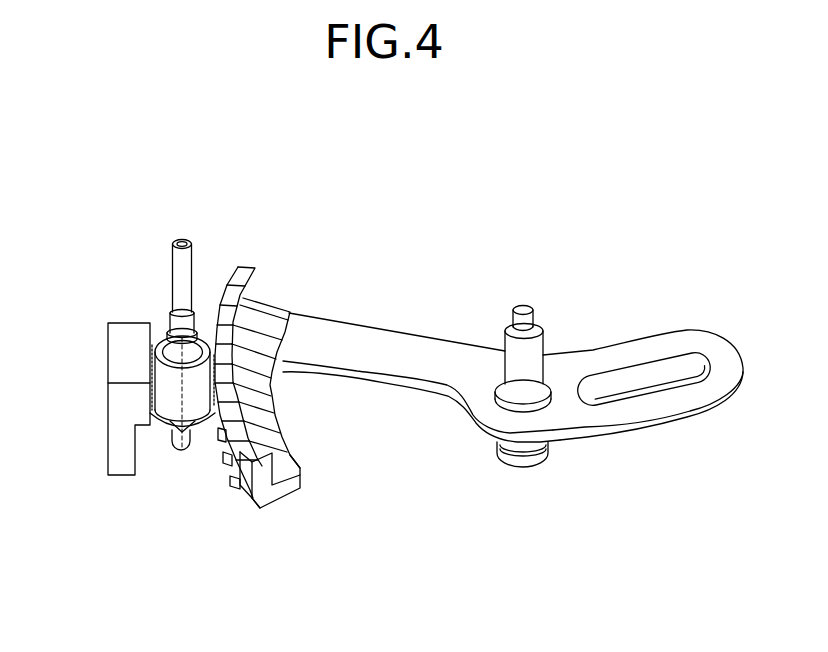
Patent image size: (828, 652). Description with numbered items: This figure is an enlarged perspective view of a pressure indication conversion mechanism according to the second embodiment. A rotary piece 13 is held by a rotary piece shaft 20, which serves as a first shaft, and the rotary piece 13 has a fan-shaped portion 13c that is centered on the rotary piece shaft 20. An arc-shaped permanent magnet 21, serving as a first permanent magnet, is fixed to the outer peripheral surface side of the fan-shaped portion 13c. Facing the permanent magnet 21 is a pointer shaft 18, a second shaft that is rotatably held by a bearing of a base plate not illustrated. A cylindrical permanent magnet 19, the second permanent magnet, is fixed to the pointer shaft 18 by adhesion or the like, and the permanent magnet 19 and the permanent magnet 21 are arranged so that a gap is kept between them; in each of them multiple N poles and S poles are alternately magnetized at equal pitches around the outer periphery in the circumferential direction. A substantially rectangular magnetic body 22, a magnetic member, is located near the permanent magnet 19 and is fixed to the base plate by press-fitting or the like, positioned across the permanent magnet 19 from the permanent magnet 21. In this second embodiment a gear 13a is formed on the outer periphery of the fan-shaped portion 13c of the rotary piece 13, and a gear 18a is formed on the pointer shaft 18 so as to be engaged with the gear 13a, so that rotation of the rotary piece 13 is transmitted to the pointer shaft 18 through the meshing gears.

The rotary piece 13 is at (586, 409).
The gear 13a is at (247, 500).
The fan-shaped portion 13c is at (301, 378).
The pointer shaft 18 is at (187, 255).
The gear 18a is at (182, 449).
The cylindrical permanent magnet 19 is at (166, 338).
The rotary piece shaft 20 is at (546, 368).
The arc-shaped permanent magnet 21 is at (280, 304).
The magnetic body 22 is at (127, 353).